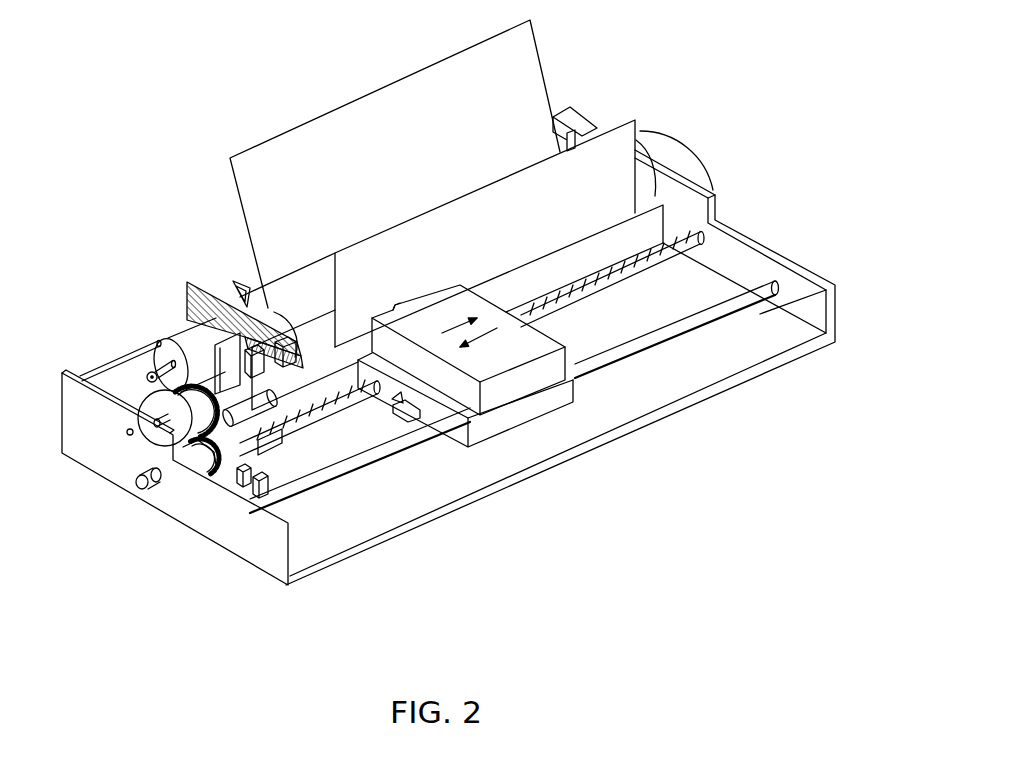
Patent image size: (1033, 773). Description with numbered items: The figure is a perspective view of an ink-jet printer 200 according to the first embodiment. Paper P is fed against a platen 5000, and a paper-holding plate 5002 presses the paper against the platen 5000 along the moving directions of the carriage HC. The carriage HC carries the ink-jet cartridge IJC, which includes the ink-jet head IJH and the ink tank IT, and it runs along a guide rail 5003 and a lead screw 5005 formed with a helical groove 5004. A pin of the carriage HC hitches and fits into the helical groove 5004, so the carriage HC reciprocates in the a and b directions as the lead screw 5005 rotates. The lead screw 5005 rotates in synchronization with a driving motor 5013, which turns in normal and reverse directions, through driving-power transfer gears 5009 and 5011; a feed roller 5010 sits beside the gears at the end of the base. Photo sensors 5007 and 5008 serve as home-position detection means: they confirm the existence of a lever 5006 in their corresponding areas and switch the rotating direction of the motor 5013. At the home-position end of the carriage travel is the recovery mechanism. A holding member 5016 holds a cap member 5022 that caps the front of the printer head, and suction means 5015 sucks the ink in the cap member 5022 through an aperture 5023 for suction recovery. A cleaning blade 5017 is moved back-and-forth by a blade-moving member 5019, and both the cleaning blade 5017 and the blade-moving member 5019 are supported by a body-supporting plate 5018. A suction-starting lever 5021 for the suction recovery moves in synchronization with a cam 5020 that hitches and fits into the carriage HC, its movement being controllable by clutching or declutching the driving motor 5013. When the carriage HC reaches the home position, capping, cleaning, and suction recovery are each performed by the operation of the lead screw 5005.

The recording paper P is at (533, 61).
The printer 200 is at (603, 116).
The platen 5000 is at (704, 182).
The paper-holding plate 5002 is at (582, 247).
The cap member 5022 is at (340, 338).
The ink-jet cartridge IJC is at (546, 339).
The ink jet head IJH is at (396, 311).
The ink tank IT is at (493, 300).
The carriage HC is at (563, 396).
The guide rail 5003 is at (440, 437).
The helical groove 5004 is at (325, 415).
The lead screw 5005 is at (328, 435).
The lever 5006 is at (394, 408).
The photo sensor 5007 is at (263, 470).
The photo sensor 5008 is at (291, 472).
The driving-power transfer gear 5009 is at (193, 463).
The paper feed roller 5010 is at (153, 413).
The driving-power transfer gear 5011 is at (140, 376).
The driving motor 5013 is at (187, 325).
The suction means 5015 is at (224, 292).
The holding member 5016 is at (267, 306).
The cleaning blade 5017 is at (287, 336).
The body-supporting plate 5018 is at (200, 281).
The blade-moving member 5019 is at (188, 292).
The cam 5020 is at (222, 403).
The suction-starting lever 5021 is at (172, 340).
The aperture 5023 is at (278, 438).